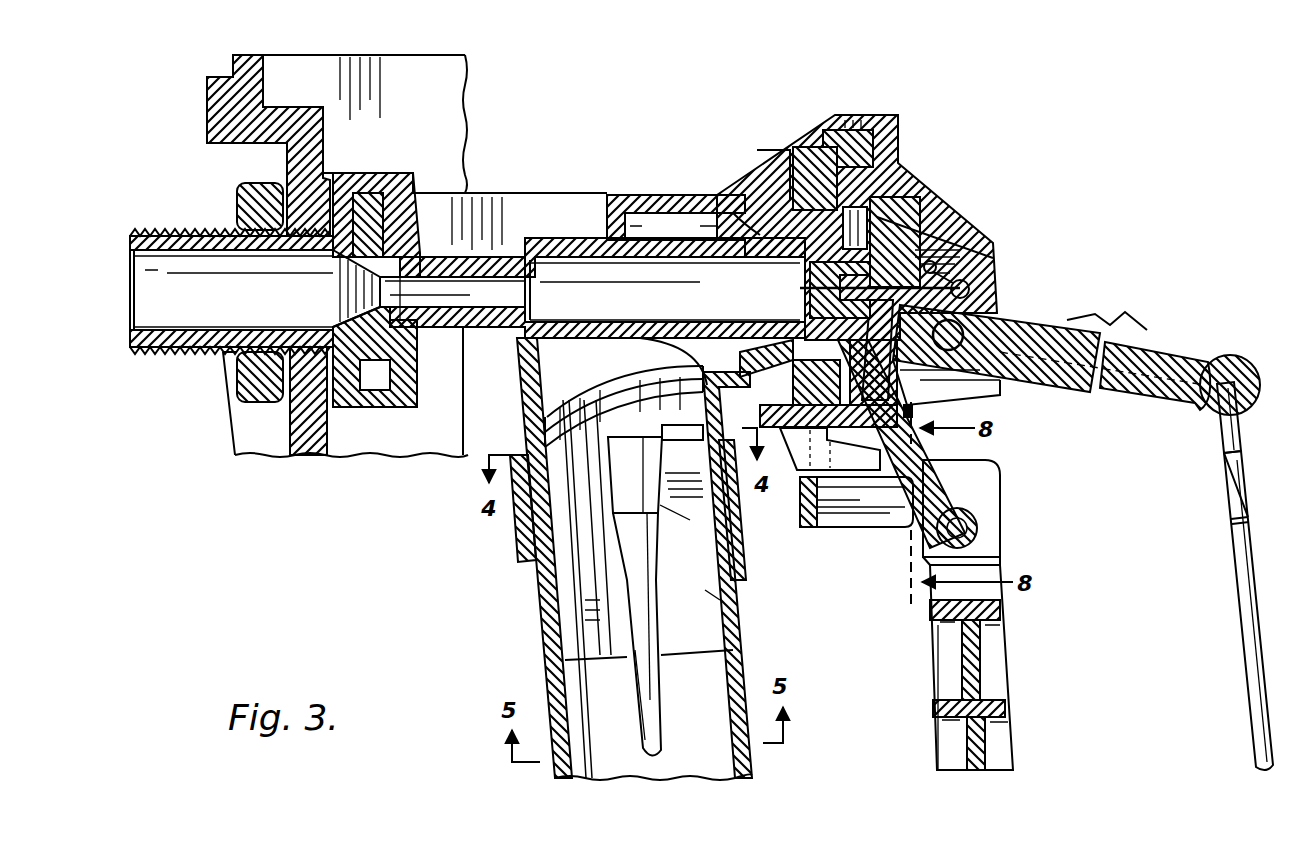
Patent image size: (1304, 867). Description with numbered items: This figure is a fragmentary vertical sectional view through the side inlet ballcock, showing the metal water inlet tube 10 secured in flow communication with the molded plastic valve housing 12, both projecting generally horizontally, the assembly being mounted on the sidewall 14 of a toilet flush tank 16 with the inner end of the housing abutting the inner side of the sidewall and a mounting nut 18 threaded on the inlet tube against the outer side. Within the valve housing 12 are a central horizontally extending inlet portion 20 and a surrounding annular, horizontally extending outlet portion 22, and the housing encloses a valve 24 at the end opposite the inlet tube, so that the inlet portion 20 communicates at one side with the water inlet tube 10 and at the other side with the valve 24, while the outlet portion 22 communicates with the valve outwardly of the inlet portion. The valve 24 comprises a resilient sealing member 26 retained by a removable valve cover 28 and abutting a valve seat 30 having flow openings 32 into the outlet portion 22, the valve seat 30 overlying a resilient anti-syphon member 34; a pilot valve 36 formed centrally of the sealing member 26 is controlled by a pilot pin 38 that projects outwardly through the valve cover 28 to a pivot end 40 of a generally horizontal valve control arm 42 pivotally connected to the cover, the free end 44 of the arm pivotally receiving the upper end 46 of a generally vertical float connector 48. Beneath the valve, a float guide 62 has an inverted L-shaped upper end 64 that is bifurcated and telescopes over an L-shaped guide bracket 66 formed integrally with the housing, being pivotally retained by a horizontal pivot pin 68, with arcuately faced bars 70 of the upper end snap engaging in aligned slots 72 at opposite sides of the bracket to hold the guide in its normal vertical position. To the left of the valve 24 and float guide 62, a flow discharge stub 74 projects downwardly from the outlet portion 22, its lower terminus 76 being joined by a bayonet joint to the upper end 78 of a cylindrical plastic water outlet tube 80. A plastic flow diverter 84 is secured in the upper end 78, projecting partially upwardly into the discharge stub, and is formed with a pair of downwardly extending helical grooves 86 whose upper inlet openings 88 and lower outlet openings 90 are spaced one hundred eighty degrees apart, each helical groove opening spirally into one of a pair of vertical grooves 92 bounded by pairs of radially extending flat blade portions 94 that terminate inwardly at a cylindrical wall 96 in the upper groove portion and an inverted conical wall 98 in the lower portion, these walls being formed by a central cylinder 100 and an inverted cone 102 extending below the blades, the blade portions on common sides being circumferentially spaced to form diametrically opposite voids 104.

The water inlet tube 10 is at (195, 222).
The valve housing 12 is at (582, 236).
The sidewall 14 is at (313, 440).
The toilet flush tank 16 is at (283, 425).
The mounting nut 18 is at (238, 372).
The inlet portion 20 is at (604, 312).
The outlet portion 22 is at (648, 236).
The valve 24 is at (806, 298).
The resilient sealing member 26 is at (810, 272).
The valve cover 28 is at (880, 186).
The valve seat 30 is at (815, 152).
The flow openings 32 is at (765, 195).
The resilient anti-syphon member 34 is at (736, 228).
The pilot valve 36 is at (890, 216).
The pilot pin 38 is at (947, 270).
The pivot end 40 is at (997, 394).
The valve control arm 42 is at (1022, 312).
The free end 44 is at (1230, 355).
The upper end 46 is at (1220, 435).
The float connector 48 is at (1230, 597).
The float guide 62 is at (1013, 642).
The inverted L-shaped upper end 64 is at (990, 470).
The guide bracket 66 is at (920, 418).
The pivot pin 68 is at (970, 528).
The bars 70 is at (852, 503).
The slots 72 is at (905, 541).
The flow discharge stub 74 is at (522, 402).
The lower terminus 76 is at (518, 543).
The upper end 78 is at (545, 610).
The water outlet tube 80 is at (537, 652).
The flow diverter 84 is at (568, 627).
The helical grooves 86 is at (540, 419).
The upper inlet openings 88 is at (568, 400).
The lower outlet openings 90 is at (690, 442).
The vertical grooves 92 is at (705, 597).
The flat blade portions 94 is at (671, 552).
The cylindrical wall 96 is at (616, 490).
The inverted conical wall 98 is at (657, 553).
The cylinder 100 is at (663, 507).
The inverted cone 102 is at (664, 700).
The voids 104 is at (578, 652).